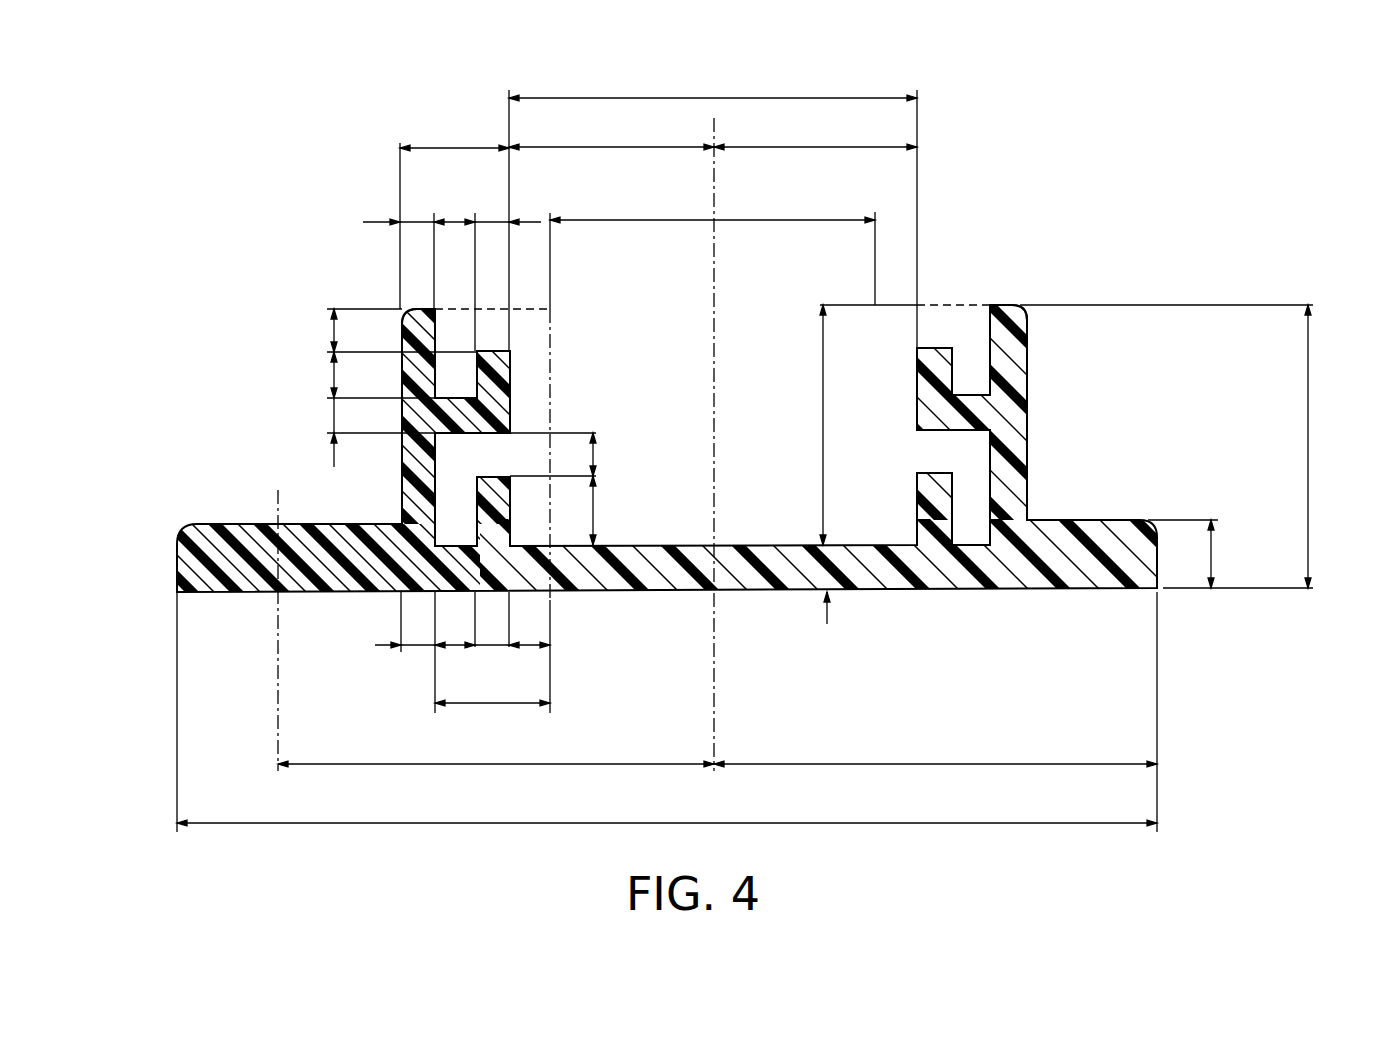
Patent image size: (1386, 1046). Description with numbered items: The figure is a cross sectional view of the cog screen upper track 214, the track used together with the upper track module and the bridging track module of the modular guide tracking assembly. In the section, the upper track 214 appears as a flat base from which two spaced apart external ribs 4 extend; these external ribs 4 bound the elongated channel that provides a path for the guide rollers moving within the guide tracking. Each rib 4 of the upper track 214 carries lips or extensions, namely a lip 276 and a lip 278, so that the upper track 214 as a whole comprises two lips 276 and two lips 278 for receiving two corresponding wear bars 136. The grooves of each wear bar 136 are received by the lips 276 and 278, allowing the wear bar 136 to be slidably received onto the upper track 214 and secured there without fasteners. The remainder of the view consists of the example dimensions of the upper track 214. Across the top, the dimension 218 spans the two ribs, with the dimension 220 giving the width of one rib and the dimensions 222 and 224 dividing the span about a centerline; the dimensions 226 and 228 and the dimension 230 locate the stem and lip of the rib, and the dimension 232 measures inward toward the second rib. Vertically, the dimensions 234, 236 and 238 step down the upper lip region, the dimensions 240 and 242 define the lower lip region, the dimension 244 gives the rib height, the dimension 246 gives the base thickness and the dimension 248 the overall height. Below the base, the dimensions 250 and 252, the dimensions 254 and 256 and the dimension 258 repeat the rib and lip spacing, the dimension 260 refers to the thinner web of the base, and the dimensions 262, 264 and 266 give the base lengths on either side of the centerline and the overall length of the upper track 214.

The external rib 4 is at (417, 310).
The wear bar 136 is at (553, 325).
The upper track 214 is at (180, 522).
The dimension 218 is at (697, 97).
The dimension 220 is at (457, 147).
The dimension 222 is at (603, 145).
The dimension 224 is at (803, 147).
The dimension 226 is at (417, 220).
The dimension 228 is at (492, 218).
The dimension 230 is at (455, 217).
The dimension 232 is at (607, 217).
The dimension 234 is at (334, 332).
The dimension 236 is at (334, 377).
The dimension 238 is at (334, 418).
The dimension 240 is at (595, 455).
The dimension 242 is at (595, 513).
The dimension 244 is at (823, 427).
The dimension 246 is at (1211, 553).
The dimension 248 is at (1309, 447).
The dimension 250 is at (417, 643).
The dimension 252 is at (492, 648).
The dimension 254 is at (453, 650).
The dimension 256 is at (530, 643).
The dimension 258 is at (502, 705).
The dimension 260 is at (815, 595).
The dimension 262 is at (460, 766).
The dimension 264 is at (899, 766).
The dimension 266 is at (763, 825).
The lip 276 is at (497, 362).
The lip 278 is at (483, 487).